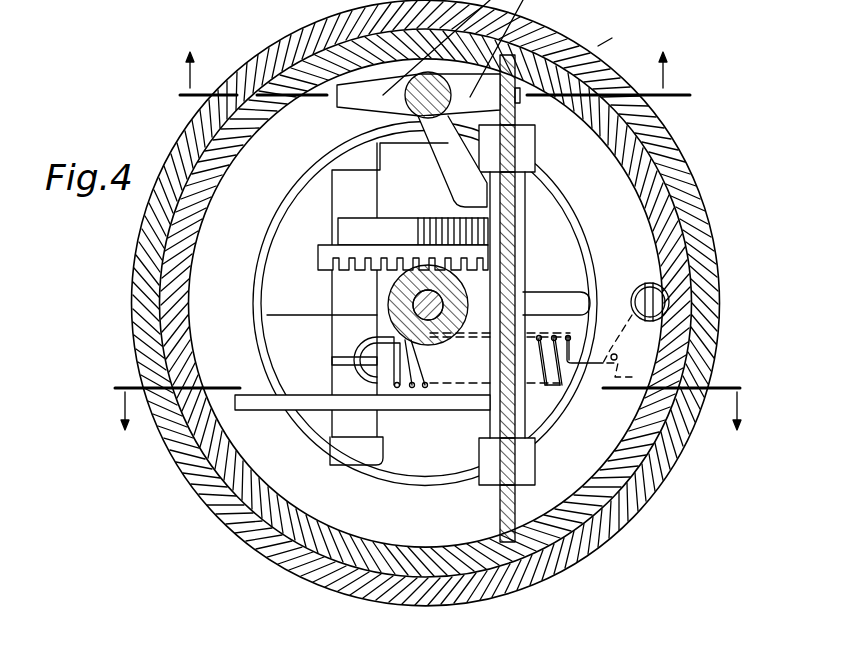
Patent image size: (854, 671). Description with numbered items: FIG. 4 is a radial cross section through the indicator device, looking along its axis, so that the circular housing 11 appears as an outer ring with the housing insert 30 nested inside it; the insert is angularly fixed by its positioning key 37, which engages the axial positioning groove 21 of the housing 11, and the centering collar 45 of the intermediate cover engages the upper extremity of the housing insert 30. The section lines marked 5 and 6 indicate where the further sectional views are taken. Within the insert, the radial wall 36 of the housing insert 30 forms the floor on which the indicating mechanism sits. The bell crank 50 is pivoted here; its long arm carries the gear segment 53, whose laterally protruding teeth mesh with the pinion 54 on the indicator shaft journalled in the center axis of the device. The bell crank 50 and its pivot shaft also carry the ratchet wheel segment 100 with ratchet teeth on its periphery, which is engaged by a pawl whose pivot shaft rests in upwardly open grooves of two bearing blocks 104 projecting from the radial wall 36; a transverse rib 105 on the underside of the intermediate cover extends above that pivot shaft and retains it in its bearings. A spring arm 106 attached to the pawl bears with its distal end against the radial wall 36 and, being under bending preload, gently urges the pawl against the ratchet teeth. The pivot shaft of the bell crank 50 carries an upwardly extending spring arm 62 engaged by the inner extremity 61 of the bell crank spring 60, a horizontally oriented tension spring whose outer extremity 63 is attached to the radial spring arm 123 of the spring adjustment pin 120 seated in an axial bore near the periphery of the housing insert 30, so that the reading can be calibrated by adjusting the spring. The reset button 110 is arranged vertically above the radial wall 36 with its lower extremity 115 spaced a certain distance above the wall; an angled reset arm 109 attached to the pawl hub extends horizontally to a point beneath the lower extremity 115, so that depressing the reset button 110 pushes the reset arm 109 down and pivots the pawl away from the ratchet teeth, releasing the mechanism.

The section line 5- 5 is at (421, 75).
The section line 6- 6 is at (425, 410).
The housing 11 is at (168, 432).
The positioning groove 21 is at (322, 332).
The housing insert 30 is at (188, 457).
The radial wall 36 is at (228, 364).
The positioning key 37 is at (190, 293).
The centering collar 45 is at (214, 470).
The bell crank 50 is at (332, 360).
The gear segment 53 is at (318, 257).
The pinion 54 is at (556, 268).
The bell crank spring 60 is at (548, 345).
The inner extremity 61 is at (362, 382).
The spring arm 62 is at (348, 362).
The outer extremity 63 is at (582, 412).
The ratchet wheel segment 100 is at (455, 246).
The bearing blocks 104 is at (536, 140).
The transverse rib 105 is at (495, 213).
The spring arm 106 is at (420, 407).
The reset arm 109 is at (445, 180).
The reset button 110 is at (337, 100).
The lower extremity 115 is at (605, 42).
The spring adjustment pin 120 is at (668, 297).
The radial spring arm 123 is at (705, 326).